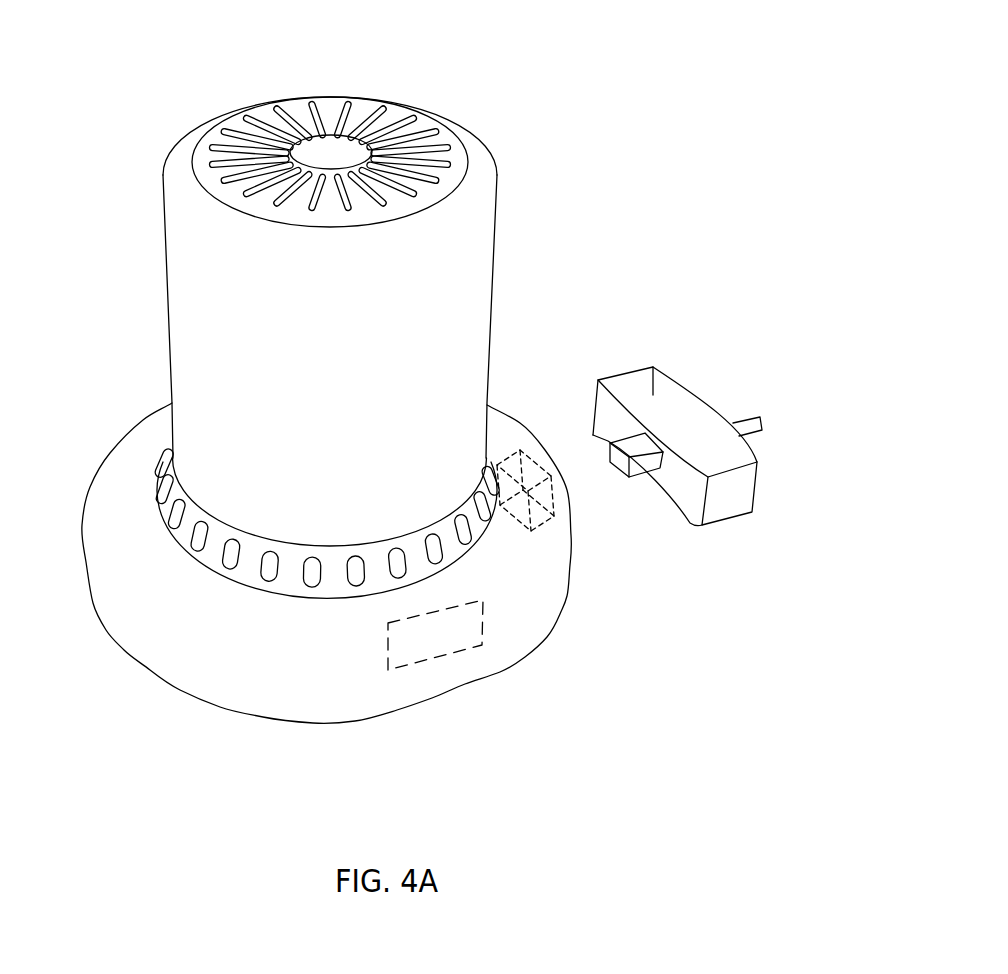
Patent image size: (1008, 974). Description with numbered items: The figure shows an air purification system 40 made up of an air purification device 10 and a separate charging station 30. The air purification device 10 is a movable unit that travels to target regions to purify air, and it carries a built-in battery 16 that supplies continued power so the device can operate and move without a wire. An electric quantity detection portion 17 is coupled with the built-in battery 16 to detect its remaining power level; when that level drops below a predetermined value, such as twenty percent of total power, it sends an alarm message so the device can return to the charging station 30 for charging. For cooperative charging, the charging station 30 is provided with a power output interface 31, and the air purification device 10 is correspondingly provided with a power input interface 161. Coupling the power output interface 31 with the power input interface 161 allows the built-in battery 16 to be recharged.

The air purification device 10 is at (194, 245).
The built-in battery 16 is at (533, 540).
The power input interface 161 is at (553, 523).
The electric quantity detection portion 17 is at (423, 638).
The charging station 30 is at (653, 367).
The power output interface 31 is at (628, 442).
The air purification system 40 is at (601, 88).